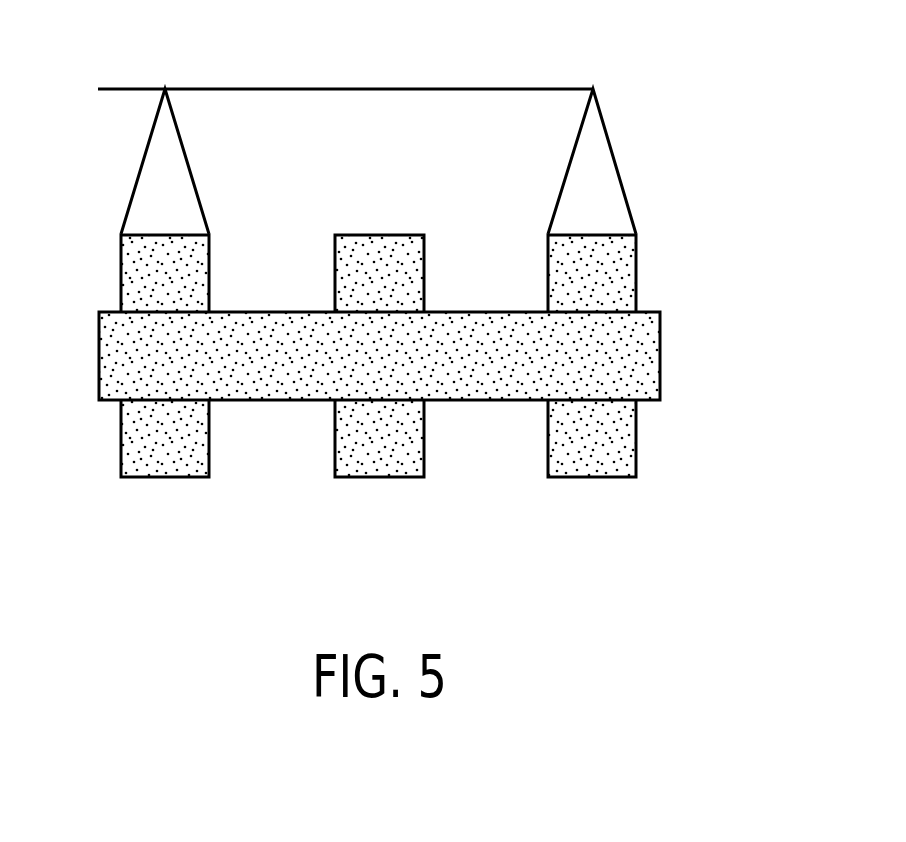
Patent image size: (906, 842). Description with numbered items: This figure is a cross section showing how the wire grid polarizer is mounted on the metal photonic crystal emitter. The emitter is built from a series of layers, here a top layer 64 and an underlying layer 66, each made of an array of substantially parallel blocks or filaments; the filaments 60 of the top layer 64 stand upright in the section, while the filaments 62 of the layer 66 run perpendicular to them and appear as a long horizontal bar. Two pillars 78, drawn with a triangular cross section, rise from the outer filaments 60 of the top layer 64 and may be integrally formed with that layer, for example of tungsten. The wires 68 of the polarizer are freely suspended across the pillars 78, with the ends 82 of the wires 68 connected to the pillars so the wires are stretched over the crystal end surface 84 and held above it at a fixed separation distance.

The filaments 60 is at (123, 265).
The filaments 62 is at (100, 350).
The top layer 64 is at (702, 267).
The layer 66 is at (408, 356).
The wires 68 is at (560, 88).
The pillars 78 is at (198, 190).
The ends of wires 82 is at (409, 47).
The crystal end surface 84 is at (127, 307).